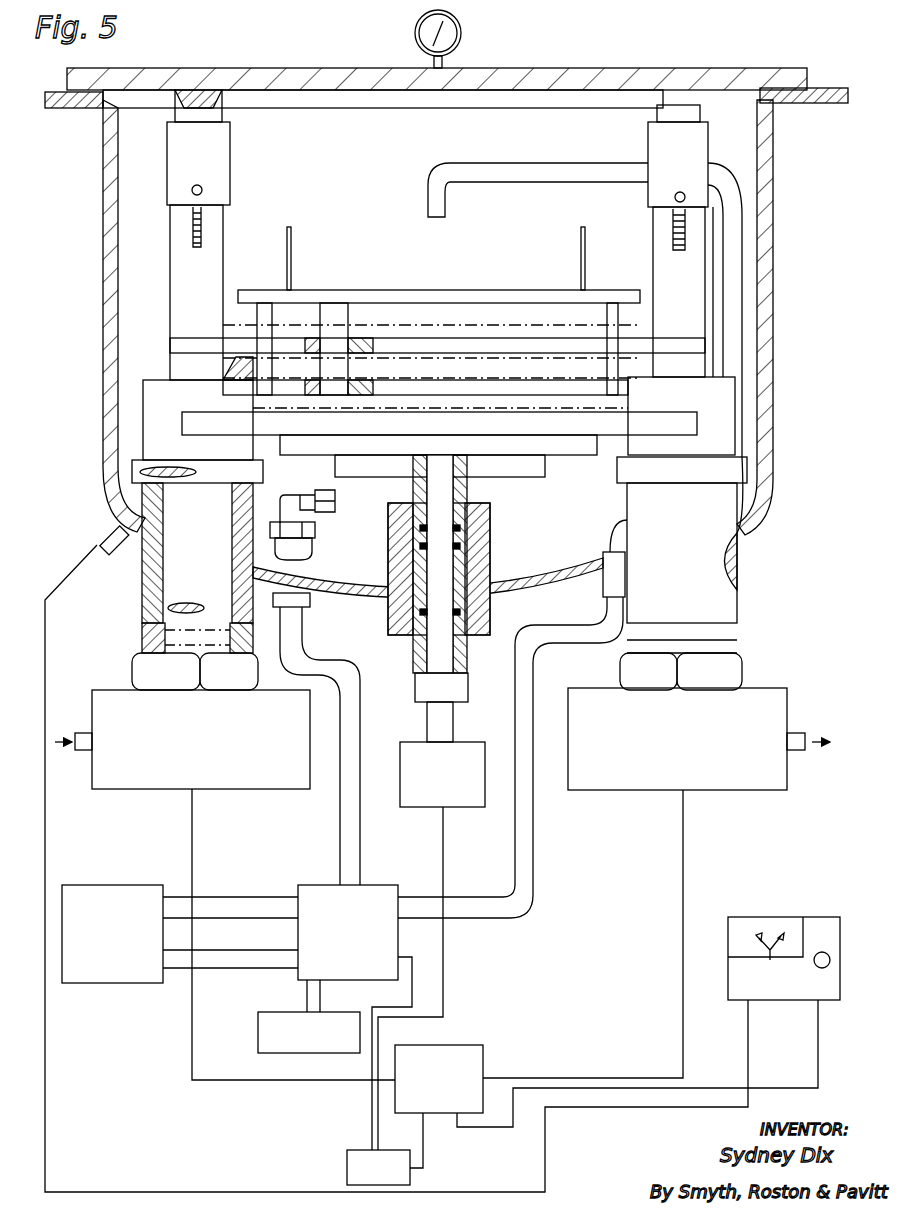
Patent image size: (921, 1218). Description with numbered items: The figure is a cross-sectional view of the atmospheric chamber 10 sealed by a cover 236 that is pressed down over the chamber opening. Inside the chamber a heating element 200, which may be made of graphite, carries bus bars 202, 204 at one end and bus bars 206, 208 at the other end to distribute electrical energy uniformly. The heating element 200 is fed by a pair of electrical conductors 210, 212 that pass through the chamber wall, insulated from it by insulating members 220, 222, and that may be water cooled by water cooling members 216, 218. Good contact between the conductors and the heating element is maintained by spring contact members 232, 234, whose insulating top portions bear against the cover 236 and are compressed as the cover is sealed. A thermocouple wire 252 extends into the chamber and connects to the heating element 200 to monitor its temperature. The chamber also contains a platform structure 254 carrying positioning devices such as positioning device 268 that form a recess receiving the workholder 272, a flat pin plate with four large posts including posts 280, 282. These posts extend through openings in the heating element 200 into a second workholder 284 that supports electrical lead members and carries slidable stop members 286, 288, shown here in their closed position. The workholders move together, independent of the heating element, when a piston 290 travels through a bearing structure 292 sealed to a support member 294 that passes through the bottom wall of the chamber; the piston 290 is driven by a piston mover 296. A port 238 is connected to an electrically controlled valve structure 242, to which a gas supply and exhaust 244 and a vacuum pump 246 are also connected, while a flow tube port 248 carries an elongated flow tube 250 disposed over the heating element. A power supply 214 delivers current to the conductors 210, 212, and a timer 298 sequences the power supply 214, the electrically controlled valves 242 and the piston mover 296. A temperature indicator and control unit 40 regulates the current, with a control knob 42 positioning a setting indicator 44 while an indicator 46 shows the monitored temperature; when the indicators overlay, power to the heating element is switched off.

The atmospheric chamber 10 is at (446, 282).
The cover 236 is at (517, 78).
The spring contact member 232 is at (218, 146).
The spring contact member 234 is at (665, 145).
The elongated flow tube 250 is at (510, 170).
The bus bar 202 is at (170, 333).
The bus bar 206 is at (700, 330).
The second workholder 284 is at (462, 292).
The stop member 286 is at (292, 262).
The stop member 288 is at (580, 252).
The large post 280 is at (273, 326).
The large post 282 is at (606, 318).
The heating element 200 is at (431, 355).
The bus bar 204 is at (175, 367).
The bus bar 208 is at (700, 365).
The thermocouple wire 252 is at (230, 368).
The positioning device 268 is at (498, 387).
The workholder 272 is at (530, 398).
The electrical conductor 210 is at (160, 430).
The electrical conductor 212 is at (717, 438).
The platform structure 254 is at (439, 423).
The insulating member 220 is at (142, 584).
The insulating member 222 is at (740, 560).
The support member 294 is at (400, 620).
The bearing structure 292 is at (480, 562).
The piston 290 is at (432, 655).
The port 238 is at (320, 520).
The flow tube port 248 is at (603, 555).
The water cooling member 216 is at (225, 885).
The water cooling member 218 is at (656, 883).
The piston mover 296 is at (462, 742).
The gas supply and exhaust 244 is at (115, 885).
The electrically controlled valve structure 242 is at (385, 885).
The vacuum pump 246 is at (325, 1010).
The power supply 214 is at (483, 1050).
The timer 298 is at (347, 1160).
The temperature indicator and control unit 40 is at (752, 975).
The control knob 42 is at (825, 952).
The setting indicator 44 is at (782, 932).
The indicator 46 is at (758, 936).